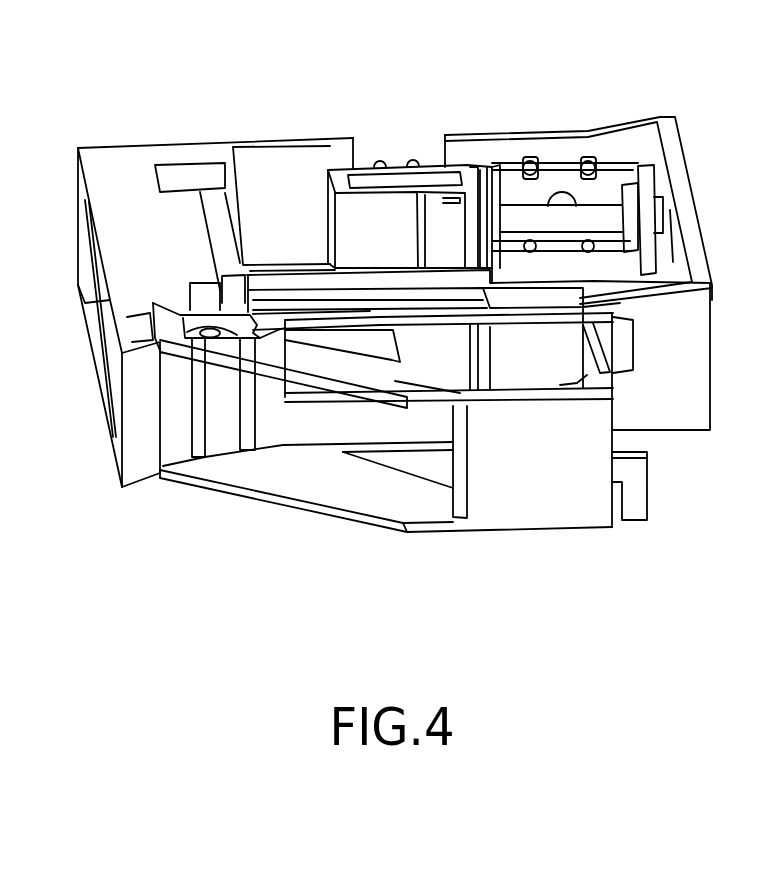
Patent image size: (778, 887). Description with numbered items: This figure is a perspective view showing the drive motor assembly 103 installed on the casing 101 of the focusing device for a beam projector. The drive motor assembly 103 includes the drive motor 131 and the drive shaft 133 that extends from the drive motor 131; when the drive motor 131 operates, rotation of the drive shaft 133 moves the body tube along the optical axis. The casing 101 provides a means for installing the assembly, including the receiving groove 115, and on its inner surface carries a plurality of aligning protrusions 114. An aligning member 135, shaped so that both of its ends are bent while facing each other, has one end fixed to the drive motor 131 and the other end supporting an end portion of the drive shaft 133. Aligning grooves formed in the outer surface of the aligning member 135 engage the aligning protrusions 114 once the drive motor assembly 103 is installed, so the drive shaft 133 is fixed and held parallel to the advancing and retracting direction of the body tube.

The casing 101 is at (112, 148).
The drive motor assembly 103 is at (326, 204).
The aligning protrusions 114 is at (530, 157).
The receiving groove 115 is at (377, 143).
The drive motor 131 is at (400, 167).
The drive shaft 133 is at (610, 212).
The aligning member 135 is at (507, 183).